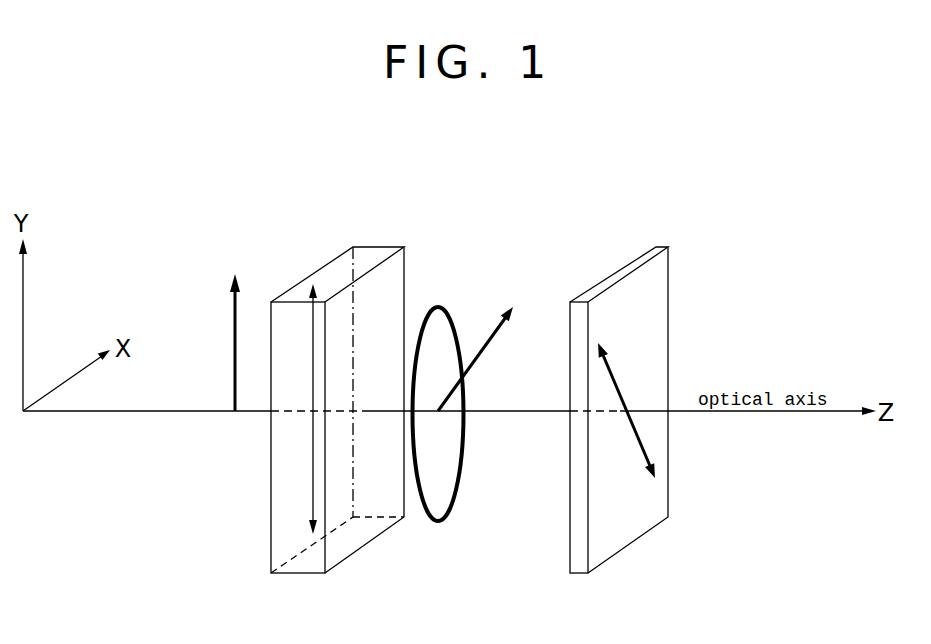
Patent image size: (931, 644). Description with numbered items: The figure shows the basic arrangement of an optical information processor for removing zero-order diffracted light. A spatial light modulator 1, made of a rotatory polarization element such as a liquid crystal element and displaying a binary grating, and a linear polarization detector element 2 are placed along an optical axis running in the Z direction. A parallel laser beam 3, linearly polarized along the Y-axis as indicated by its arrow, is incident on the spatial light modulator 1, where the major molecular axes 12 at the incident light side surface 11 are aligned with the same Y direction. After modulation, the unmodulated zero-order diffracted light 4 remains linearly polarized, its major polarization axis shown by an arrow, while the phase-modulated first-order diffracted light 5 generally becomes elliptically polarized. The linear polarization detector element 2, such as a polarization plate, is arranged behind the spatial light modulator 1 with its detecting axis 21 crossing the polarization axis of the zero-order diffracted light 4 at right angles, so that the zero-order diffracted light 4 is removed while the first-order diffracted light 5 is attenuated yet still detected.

The spatial light modulator 1 is at (395, 286).
The incident light side surface 11 is at (282, 437).
The major molecular axes 12 is at (313, 485).
The linear polarization detector element 2 is at (653, 293).
The detecting axis 21 is at (635, 437).
The parallel laser beam 3 is at (249, 288).
The zero-order diffracted light 4 is at (495, 355).
The first-order diffracted light 5 is at (472, 483).